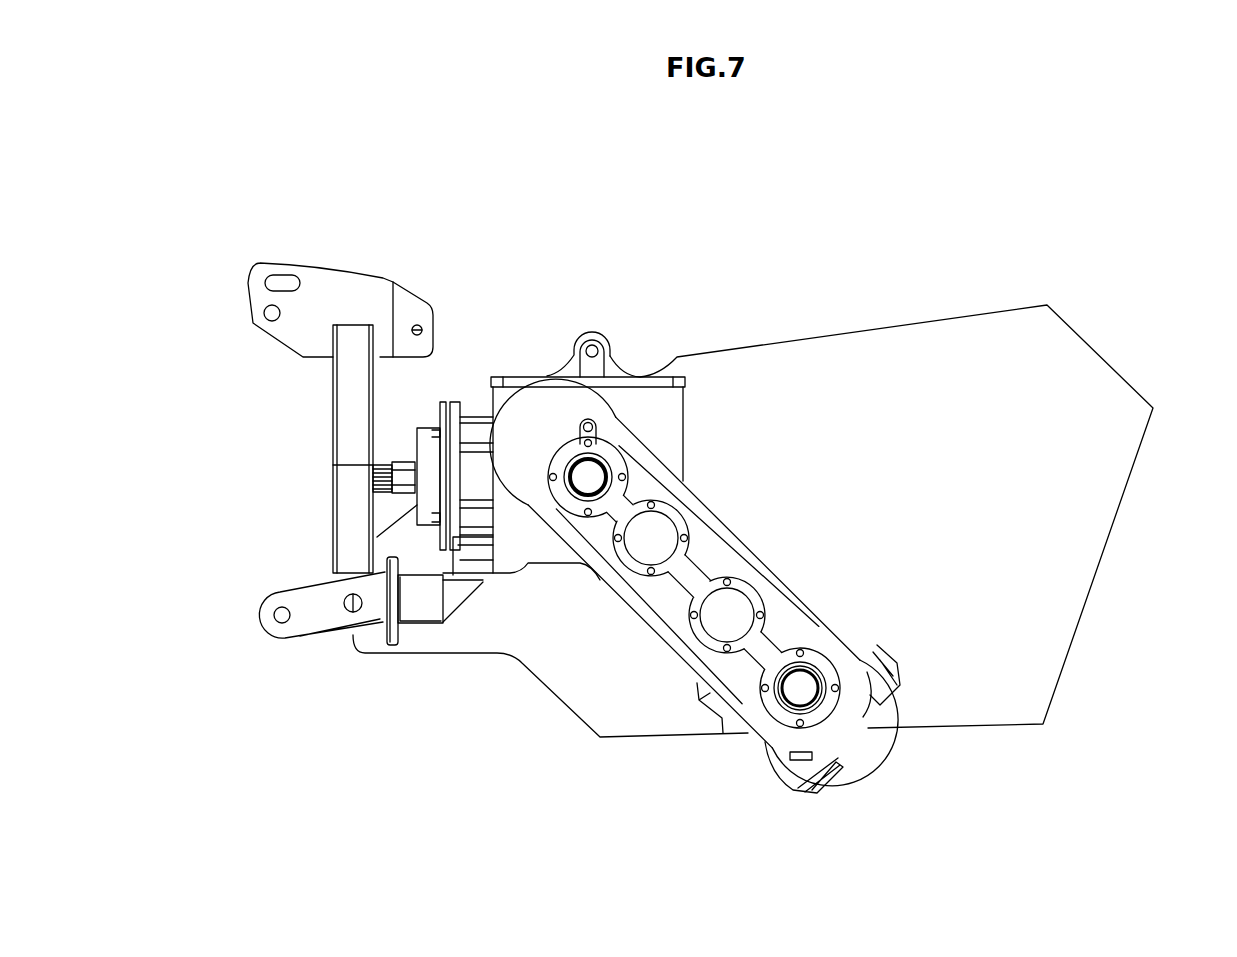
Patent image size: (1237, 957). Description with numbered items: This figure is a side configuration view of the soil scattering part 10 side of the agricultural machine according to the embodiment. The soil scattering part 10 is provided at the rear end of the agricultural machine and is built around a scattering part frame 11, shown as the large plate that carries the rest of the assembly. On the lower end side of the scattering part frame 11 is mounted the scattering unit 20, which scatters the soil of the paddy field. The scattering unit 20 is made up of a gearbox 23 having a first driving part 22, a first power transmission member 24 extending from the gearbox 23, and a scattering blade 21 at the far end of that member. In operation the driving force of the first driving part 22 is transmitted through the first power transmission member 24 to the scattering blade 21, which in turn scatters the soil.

The soil scattering part 10 is at (926, 158).
The scattering part frame 11 is at (992, 713).
The scattering unit 20 is at (713, 775).
The scattering blade 21 is at (787, 786).
The first driving part 22 is at (592, 475).
The gearbox 23 is at (685, 425).
The first power transmission member 24 is at (728, 522).